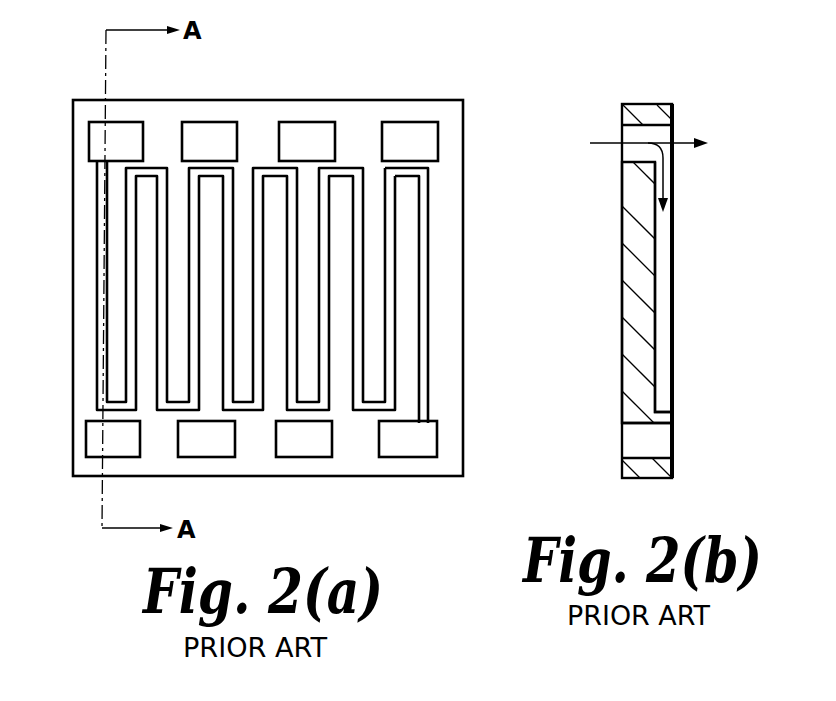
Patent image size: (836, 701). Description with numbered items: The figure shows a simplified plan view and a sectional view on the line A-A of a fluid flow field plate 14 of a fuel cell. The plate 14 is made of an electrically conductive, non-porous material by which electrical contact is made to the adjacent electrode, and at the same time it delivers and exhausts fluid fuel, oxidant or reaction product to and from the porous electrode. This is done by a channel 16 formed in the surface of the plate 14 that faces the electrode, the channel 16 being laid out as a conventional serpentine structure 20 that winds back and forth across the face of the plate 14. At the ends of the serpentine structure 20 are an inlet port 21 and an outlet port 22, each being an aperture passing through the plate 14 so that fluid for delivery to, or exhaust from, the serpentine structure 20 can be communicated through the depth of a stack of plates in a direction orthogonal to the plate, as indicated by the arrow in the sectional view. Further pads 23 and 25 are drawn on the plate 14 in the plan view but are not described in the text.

In FIG. 2A, the anode fluid flow field plate 14 is at (453, 138).
In FIG. 2B, the anode fluid flow field plate 14 is at (630, 277).
In FIG. 2A, the channel 16 is at (273, 292).
In FIG. 2B, the channel 16 is at (662, 318).
In FIG. 2A, the serpentine structure 20 is at (403, 282).
In FIG. 2A, the inlet port 21 is at (128, 127).
In FIG. 2B, the inlet port 21 is at (633, 137).
In FIG. 2A, the outlet port 22 is at (420, 441).
In FIG. 2A, the contact pad 23 is at (298, 122).
In FIG. 2A, the contact pad 25 is at (203, 122).